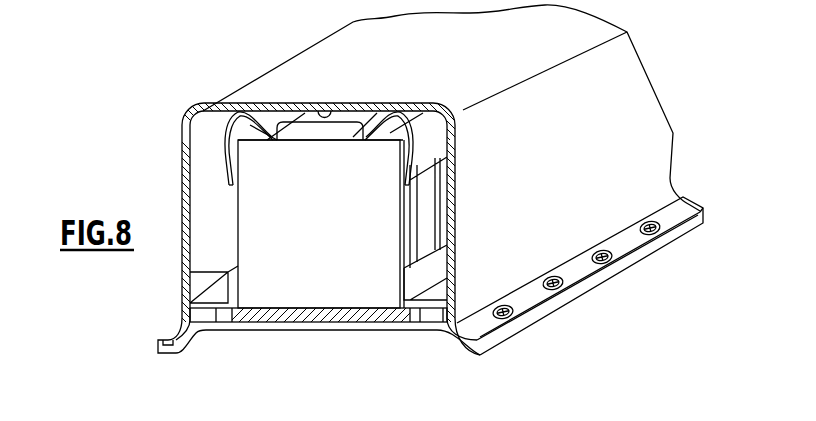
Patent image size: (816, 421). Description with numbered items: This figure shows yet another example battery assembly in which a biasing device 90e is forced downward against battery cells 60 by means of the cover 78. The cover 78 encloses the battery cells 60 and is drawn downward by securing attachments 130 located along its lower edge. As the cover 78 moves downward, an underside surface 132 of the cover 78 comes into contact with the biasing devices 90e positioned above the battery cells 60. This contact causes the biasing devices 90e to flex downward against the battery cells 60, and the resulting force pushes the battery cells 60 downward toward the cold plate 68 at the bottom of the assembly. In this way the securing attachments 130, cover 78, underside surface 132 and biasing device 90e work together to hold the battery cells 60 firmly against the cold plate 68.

The cover 78 is at (262, 83).
The biasing device 90e is at (232, 107).
The underside surface 132 is at (338, 108).
The battery cells 60 is at (380, 225).
The cold plate 68 is at (352, 318).
The securing attachments 130 is at (590, 258).